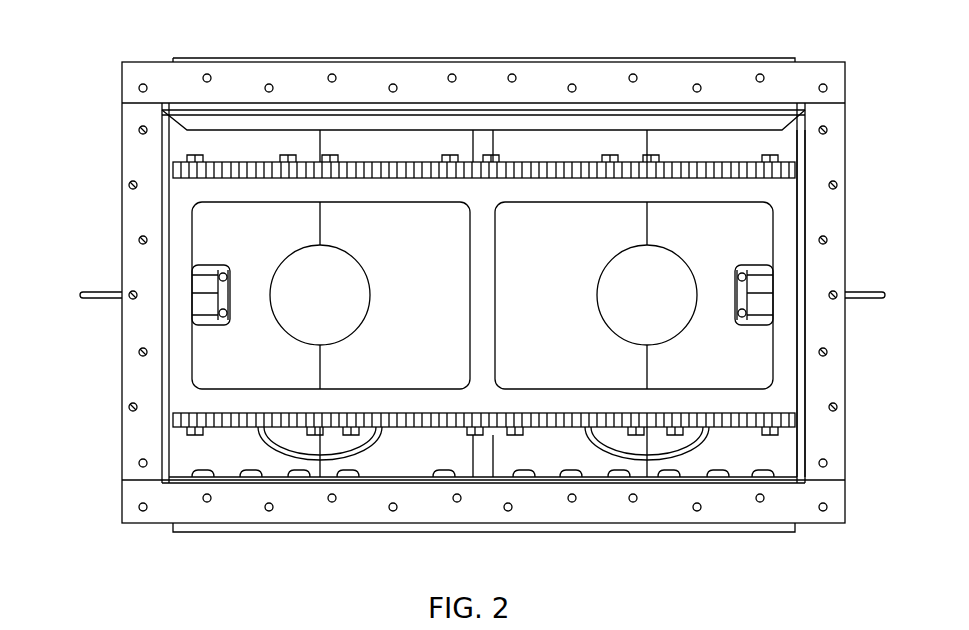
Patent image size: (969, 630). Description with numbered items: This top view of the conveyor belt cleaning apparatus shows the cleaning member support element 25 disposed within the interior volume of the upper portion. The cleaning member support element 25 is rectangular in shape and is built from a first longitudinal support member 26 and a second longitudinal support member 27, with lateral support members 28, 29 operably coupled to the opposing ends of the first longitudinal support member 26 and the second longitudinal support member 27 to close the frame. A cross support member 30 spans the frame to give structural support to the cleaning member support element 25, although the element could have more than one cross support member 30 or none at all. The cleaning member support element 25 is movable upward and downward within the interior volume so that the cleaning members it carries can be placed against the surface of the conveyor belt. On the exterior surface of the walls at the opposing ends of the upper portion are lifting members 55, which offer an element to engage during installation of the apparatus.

The cleaning member support element 25 is at (780, 188).
The first longitudinal support member 26 is at (550, 190).
The second longitudinal support member 27 is at (567, 405).
The lateral support member 28 is at (783, 255).
The lateral support member 29 is at (183, 238).
The cross support member 30 is at (482, 270).
The lifting member 55 is at (100, 298).